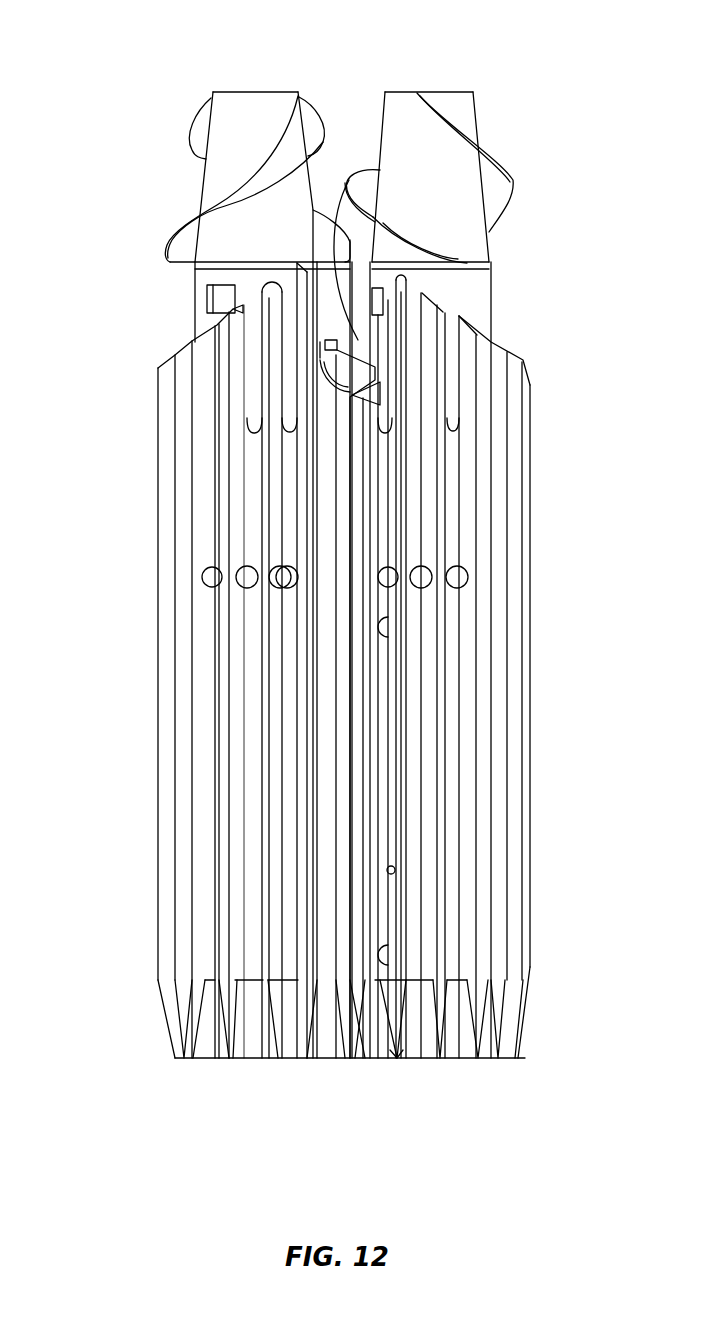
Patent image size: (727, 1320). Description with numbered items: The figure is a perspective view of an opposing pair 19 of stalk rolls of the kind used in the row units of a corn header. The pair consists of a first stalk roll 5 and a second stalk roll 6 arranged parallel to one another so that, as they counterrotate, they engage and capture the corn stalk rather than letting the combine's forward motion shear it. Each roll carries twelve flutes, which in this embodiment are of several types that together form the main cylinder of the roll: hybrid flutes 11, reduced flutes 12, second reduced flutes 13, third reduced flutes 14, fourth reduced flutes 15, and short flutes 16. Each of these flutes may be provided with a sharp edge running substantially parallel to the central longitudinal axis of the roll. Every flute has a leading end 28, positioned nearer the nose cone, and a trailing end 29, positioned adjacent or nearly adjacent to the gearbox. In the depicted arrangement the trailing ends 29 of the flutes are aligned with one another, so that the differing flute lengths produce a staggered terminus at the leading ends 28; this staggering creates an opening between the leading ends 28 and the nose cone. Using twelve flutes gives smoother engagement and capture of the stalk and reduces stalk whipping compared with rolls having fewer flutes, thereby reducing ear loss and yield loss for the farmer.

The opposing pair 19 is at (374, 64).
The second stalk roll 6 is at (114, 288).
The first stalk roll 5 is at (547, 292).
The hybrid flutes 11 is at (298, 284).
The reduced flutes 12 is at (272, 322).
The second reduced flutes 13 is at (237, 353).
The third reduced flutes 14 is at (197, 474).
The fourth reduced flutes 15 is at (325, 362).
The short flutes 16 is at (327, 396).
The leading end 28 is at (405, 275).
The trailing end 29 is at (397, 1060).